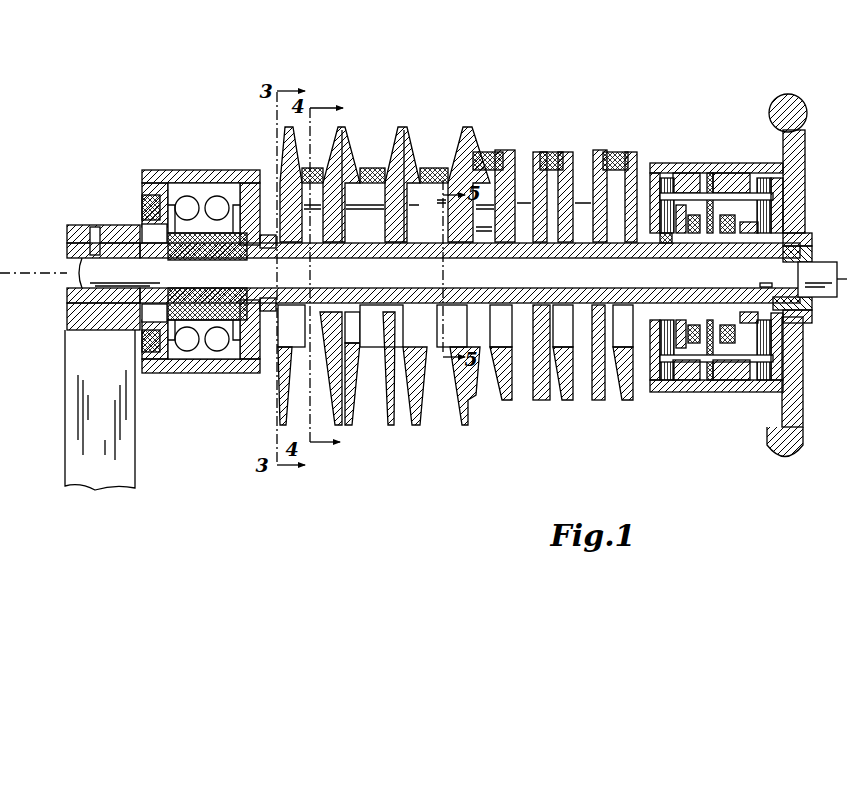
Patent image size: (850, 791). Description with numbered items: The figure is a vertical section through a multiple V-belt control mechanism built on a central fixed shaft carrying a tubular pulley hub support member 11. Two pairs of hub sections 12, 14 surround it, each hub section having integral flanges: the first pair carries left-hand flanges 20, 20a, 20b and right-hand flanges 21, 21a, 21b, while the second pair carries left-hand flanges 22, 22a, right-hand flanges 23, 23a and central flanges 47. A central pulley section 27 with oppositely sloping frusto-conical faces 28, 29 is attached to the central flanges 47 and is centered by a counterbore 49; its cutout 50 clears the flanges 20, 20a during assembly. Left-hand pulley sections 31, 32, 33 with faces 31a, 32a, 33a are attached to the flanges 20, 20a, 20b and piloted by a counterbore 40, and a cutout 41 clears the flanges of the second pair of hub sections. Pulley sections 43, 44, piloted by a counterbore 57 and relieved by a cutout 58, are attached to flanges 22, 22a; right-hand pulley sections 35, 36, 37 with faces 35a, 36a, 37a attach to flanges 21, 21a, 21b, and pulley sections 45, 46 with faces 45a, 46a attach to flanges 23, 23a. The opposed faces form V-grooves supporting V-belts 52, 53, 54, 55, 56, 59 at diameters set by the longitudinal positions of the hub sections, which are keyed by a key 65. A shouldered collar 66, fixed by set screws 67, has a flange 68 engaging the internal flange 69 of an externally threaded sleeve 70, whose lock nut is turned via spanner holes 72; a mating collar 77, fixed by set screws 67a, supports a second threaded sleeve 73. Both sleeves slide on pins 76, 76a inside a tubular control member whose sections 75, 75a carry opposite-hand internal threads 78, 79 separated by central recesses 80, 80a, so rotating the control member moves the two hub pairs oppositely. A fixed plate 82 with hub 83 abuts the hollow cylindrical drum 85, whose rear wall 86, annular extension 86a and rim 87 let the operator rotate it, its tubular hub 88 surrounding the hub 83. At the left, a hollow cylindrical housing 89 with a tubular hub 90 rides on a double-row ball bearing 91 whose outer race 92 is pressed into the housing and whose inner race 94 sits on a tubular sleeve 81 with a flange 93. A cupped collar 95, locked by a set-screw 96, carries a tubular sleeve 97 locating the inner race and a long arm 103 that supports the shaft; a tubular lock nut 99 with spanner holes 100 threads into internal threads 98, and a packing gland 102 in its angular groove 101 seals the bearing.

The tubular pulley hub support member 11 is at (581, 290).
The hub section 12 is at (383, 250).
The hub section 14 is at (522, 246).
The flange 20 is at (297, 248).
The flange 20a is at (326, 247).
The flange 20b is at (382, 247).
The flange 21 is at (500, 228).
The flange 21a is at (560, 232).
The flange 21b is at (620, 243).
The flange 22 is at (352, 327).
The flange 22a is at (395, 348).
The flange 23 is at (537, 347).
The flange 23a is at (596, 344).
The central pulley section 27 is at (479, 145).
The frusto-conical sloping face 28 is at (466, 135).
The frusto-conical sloping face 29 is at (490, 152).
The pulley section 31 is at (285, 172).
The frusto-conical face 31a is at (320, 168).
The pulley section 32 is at (353, 135).
The frusto-conical face 32a is at (357, 150).
The pulley section 33 is at (419, 132).
The frusto-conical face 33a is at (430, 140).
The pulley section 35 is at (518, 151).
The frusto-conical face 35a is at (520, 160).
The pulley section 36 is at (584, 156).
The frusto-conical face 36a is at (581, 160).
The pulley section 37 is at (642, 156).
The frusto-conical face 37a is at (642, 160).
The circular segmental counterbore 40 is at (284, 200).
The cutout 41 is at (279, 365).
The pulley section 43 is at (332, 409).
The pulley section 44 is at (391, 410).
The pulley section 45 is at (535, 405).
The frusto-conical face 45a is at (545, 390).
The pulley section 46 is at (600, 390).
The frusto-conical face 46a is at (605, 388).
The flange 47 is at (468, 336).
The circular segmental counterbore 49 is at (472, 399).
The cutout 50 is at (466, 238).
The V-belt 52 is at (283, 150).
The V-belt 53 is at (372, 140).
The V-belt 54 is at (573, 150).
The V-belt 55 is at (650, 150).
The V-belt 56 is at (442, 175).
The circular counterbore 57 is at (540, 347).
The cutout 58 is at (379, 165).
The V-belt 59 is at (505, 158).
The key 65 is at (531, 295).
The shouldered collar 66 is at (700, 246).
The set screw 67 is at (661, 248).
The set screw 67a is at (770, 284).
The circular flange 68 is at (684, 236).
The internal flange 69 is at (727, 238).
The externally threaded sleeve 70 is at (723, 161).
The spanner holes 72 is at (703, 335).
The externally threaded sleeve 73 is at (738, 182).
The left-hand section of control member 75 is at (690, 165).
The right-hand section of control member 75a is at (768, 160).
The cylindrical pin 76 is at (800, 196).
The cylindrical pin 76a is at (785, 360).
The shouldered collar 77 is at (752, 245).
The internal threads 78 is at (680, 385).
The internal threads 79 is at (748, 393).
The central recess 80 is at (697, 393).
The central recess 80a is at (715, 393).
The tubular sleeve 81 is at (195, 258).
The fixed flat circular plate 82 is at (806, 213).
The central hub 83 is at (813, 254).
The hollow cylindrical drum 85 is at (750, 155).
The rear wall 86 is at (790, 341).
The annular extension 86a is at (792, 153).
The rim 87 is at (800, 118).
The tubular hub 88 is at (813, 239).
The hollow cylindrical housing 89 is at (203, 166).
The tubular hub 90 is at (263, 246).
The double-row ball bearing 91 is at (219, 185).
The outer race 92 is at (180, 192).
The flange 93 is at (283, 303).
The inner race 94 is at (207, 303).
The cupped cylindrical collar 95 is at (86, 251).
The set-screw 96 is at (110, 266).
The tubular sleeve 97 is at (154, 273).
The internal threads 98 is at (152, 170).
The tubular lock nut 99 is at (140, 353).
The spanner holes 100 is at (142, 207).
The angular groove 101 is at (142, 334).
The packing gland 102 is at (165, 258).
The long arm 103 is at (108, 477).